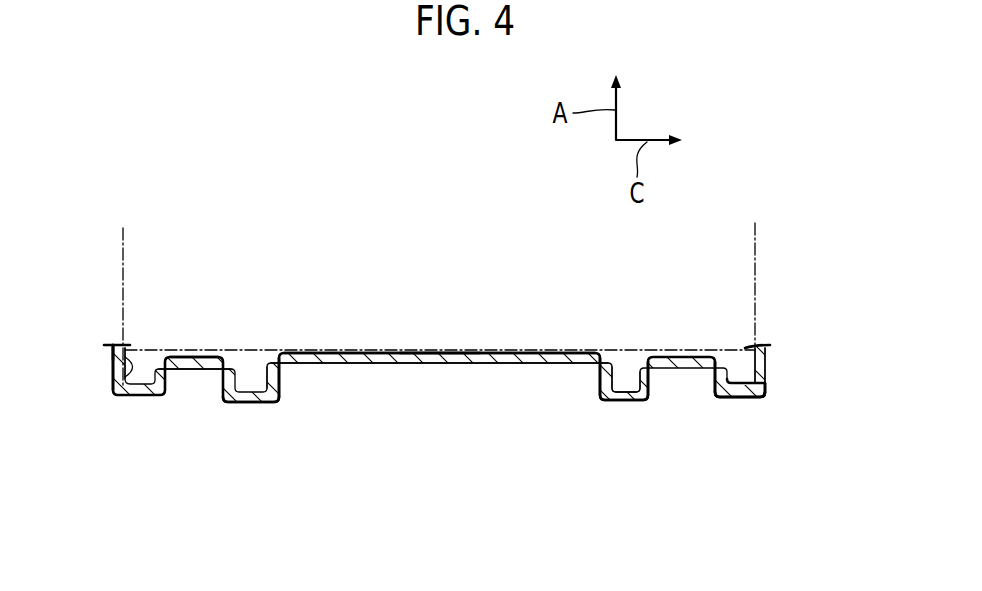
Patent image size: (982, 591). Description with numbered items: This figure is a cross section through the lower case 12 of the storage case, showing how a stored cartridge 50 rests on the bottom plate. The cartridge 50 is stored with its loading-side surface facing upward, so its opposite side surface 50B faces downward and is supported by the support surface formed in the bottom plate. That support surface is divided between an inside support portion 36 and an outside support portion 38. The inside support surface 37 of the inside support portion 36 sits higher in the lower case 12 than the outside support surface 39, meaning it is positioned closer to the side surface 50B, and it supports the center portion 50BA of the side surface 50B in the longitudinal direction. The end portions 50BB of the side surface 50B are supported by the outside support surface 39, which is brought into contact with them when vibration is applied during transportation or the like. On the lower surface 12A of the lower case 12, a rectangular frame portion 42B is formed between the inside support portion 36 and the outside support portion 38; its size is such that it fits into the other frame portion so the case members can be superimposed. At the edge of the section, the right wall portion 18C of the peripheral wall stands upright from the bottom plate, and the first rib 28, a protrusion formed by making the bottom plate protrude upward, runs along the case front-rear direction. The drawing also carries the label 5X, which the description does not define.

The cartridge 50 is at (756, 237).
The side surface 50B is at (622, 352).
The center portion 50BA is at (470, 365).
The end portions 50BB is at (147, 335).
The outside support portion 38 is at (140, 350).
The outside support surface 39 is at (213, 357).
The inside support portion 36 is at (262, 369).
The inside support surface 37 is at (442, 352).
The frame portion 42B is at (253, 405).
The space 5X is at (193, 396).
The right wall portion 18C is at (125, 377).
The first rib 28 is at (780, 357).
The lower surface 12A is at (733, 397).
The lower case 12 is at (787, 398).